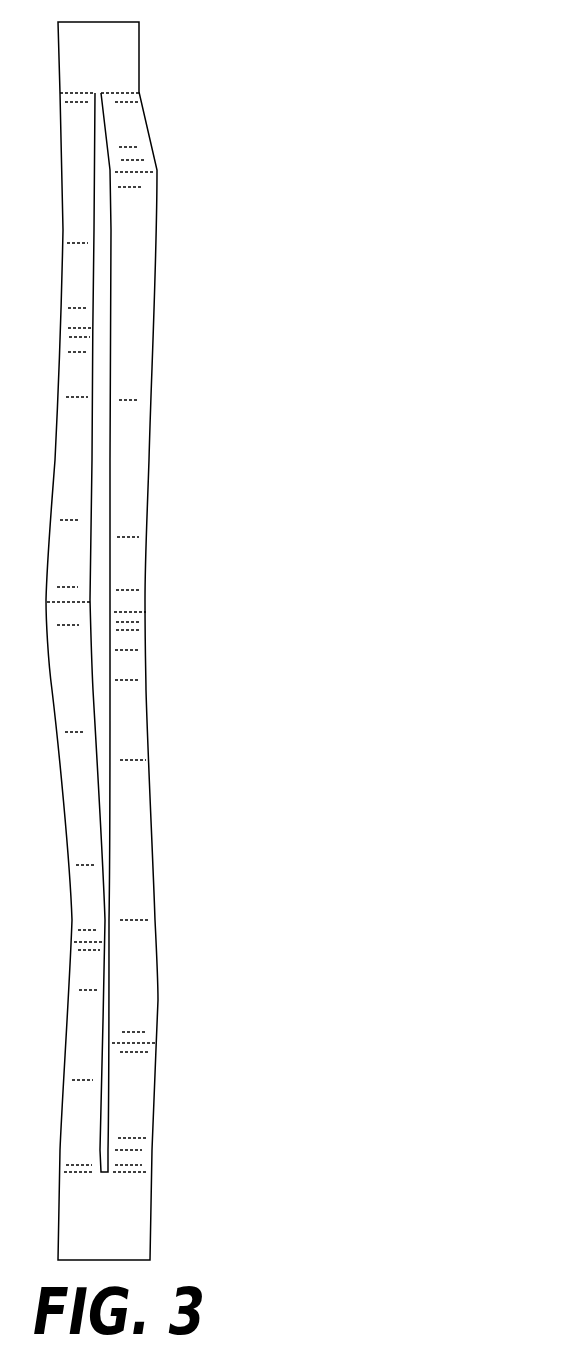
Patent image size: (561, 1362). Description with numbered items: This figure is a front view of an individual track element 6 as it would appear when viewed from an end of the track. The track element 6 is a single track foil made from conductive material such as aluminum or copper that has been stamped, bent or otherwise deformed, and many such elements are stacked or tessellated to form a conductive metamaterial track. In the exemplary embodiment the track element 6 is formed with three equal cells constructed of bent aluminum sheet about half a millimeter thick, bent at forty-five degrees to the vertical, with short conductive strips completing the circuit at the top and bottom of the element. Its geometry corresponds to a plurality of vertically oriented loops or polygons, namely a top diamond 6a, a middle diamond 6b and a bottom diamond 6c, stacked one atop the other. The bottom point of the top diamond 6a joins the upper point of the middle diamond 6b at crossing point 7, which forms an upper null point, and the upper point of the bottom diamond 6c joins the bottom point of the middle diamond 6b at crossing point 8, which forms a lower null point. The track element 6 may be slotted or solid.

The track element 6 is at (139, 87).
The top diamond 6a is at (172, 250).
The middle diamond 6b is at (163, 600).
The bottom diamond 6c is at (173, 972).
The crossing point 7 is at (172, 448).
The crossing point 8 is at (172, 823).